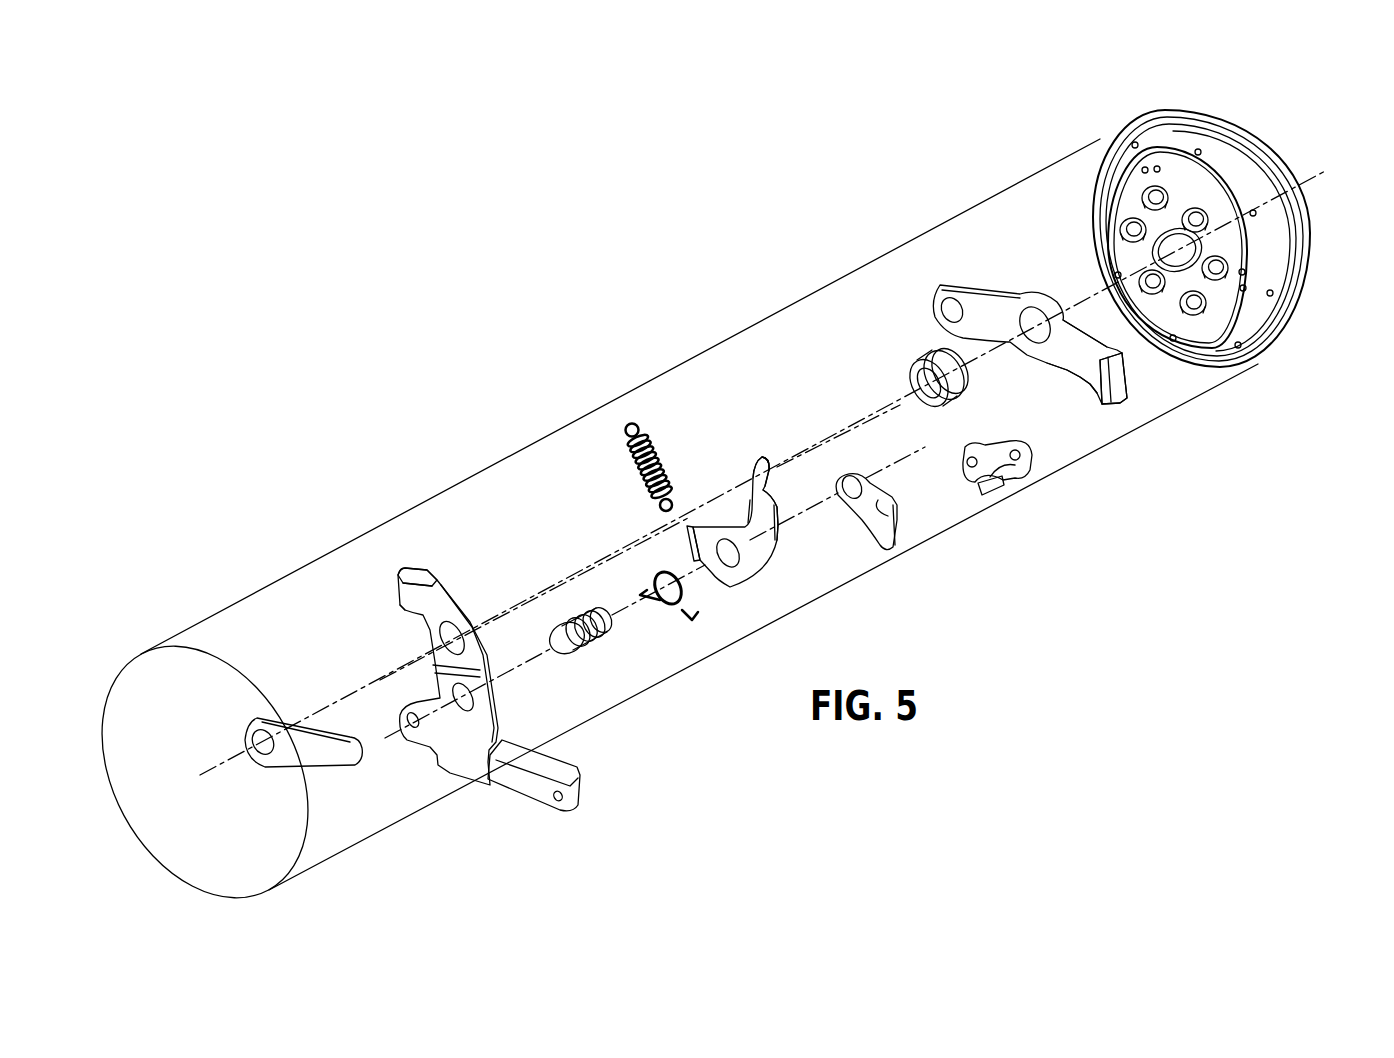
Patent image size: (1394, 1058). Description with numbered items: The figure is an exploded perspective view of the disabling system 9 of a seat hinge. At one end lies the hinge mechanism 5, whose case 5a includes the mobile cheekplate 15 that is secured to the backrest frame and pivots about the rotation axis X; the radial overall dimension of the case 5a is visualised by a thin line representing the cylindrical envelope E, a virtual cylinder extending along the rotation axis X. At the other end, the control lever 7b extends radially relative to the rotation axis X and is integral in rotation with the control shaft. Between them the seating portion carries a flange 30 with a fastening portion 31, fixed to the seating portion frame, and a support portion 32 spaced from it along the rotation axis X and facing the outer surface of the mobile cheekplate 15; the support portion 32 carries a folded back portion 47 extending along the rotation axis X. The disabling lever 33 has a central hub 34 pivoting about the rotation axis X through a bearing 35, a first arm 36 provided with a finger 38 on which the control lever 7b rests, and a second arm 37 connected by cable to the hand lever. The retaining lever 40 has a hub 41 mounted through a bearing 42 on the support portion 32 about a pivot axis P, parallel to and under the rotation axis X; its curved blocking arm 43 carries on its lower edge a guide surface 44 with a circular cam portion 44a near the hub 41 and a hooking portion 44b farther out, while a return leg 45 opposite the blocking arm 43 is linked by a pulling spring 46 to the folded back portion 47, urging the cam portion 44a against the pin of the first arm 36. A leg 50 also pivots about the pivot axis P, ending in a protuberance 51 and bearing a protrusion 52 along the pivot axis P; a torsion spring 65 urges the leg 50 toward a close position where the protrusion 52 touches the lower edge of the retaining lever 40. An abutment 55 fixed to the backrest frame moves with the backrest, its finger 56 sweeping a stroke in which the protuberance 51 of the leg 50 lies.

The hinge mechanism 5 is at (1240, 227).
The case 5a is at (1312, 228).
The mobile cheekplate 15 is at (1178, 190).
The rotation axis X is at (1304, 182).
The pivot axis P is at (898, 462).
The cylindrical envelope E is at (712, 345).
The disabling system 9 is at (858, 190).
The control lever 7b is at (318, 760).
The flange 30 is at (502, 664).
The fastening portion 31 is at (582, 795).
The support portion 32 is at (425, 610).
The folded back portion 47 is at (418, 572).
The bearing 42 is at (592, 622).
The torsion spring 65 is at (662, 612).
The pulling spring 46 is at (648, 445).
The retaining lever 40 is at (724, 551).
The hub 41 is at (726, 564).
The blocking arm 43 is at (750, 512).
The guide surface 44 is at (724, 527).
The cam portion 44a is at (780, 532).
The hooking portion 44b is at (773, 470).
The return leg 45 is at (688, 527).
The leg 50 is at (899, 545).
The protuberance 51 is at (893, 548).
The protrusion 52 is at (896, 503).
The abutment 55 is at (1012, 499).
The finger 56 is at (985, 497).
The bearing 35 is at (912, 368).
The disabling lever 33 is at (1039, 339).
The central hub 34 is at (1040, 305).
The first arm 36 is at (1075, 382).
The second arm 37 is at (957, 290).
The finger 38 is at (1115, 400).